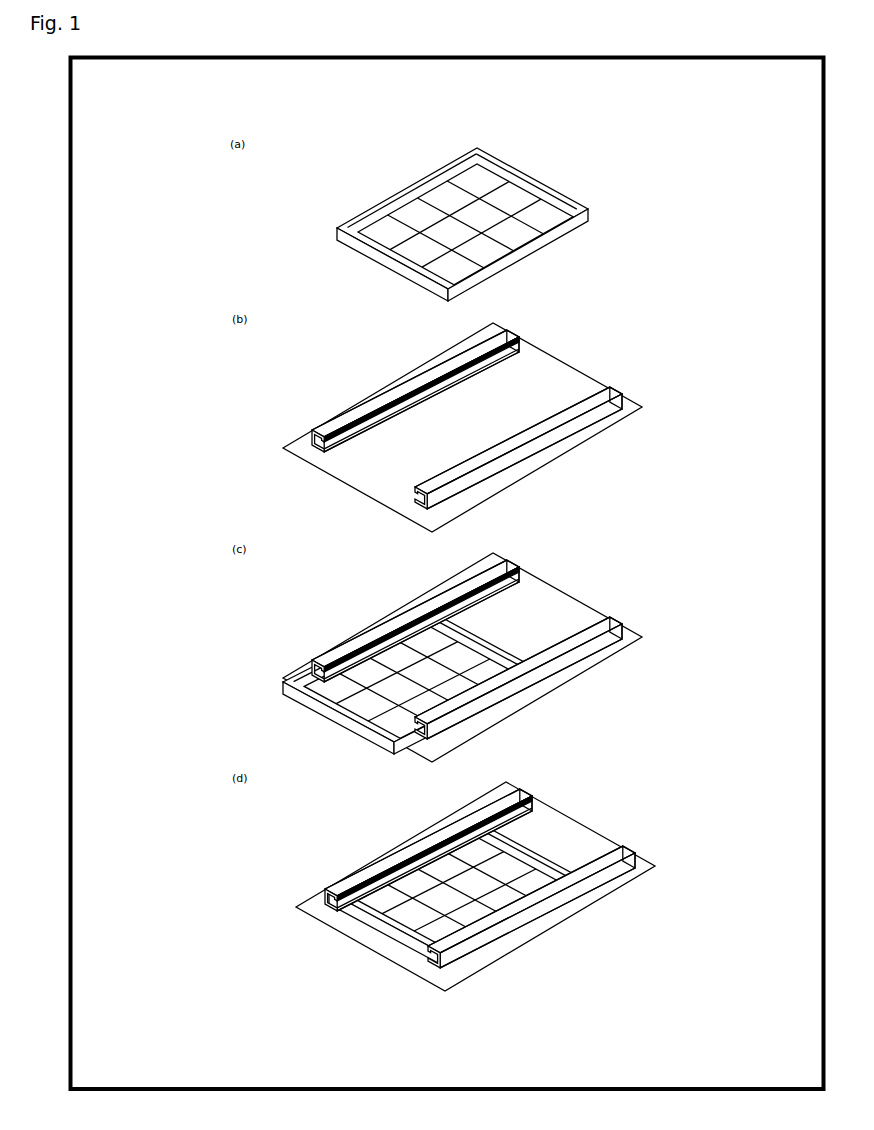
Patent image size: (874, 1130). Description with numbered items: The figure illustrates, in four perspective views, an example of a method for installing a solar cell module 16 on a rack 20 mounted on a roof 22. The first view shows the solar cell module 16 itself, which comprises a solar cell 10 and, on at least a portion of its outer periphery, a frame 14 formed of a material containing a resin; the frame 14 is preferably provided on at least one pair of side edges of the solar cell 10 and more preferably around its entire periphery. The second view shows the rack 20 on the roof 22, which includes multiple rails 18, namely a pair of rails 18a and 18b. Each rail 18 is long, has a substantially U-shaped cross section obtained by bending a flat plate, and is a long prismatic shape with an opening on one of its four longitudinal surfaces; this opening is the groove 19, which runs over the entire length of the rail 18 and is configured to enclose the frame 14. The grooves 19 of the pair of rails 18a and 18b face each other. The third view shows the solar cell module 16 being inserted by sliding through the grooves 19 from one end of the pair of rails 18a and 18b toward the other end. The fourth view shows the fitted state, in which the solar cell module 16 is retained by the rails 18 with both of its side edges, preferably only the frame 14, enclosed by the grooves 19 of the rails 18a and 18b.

The solar cell 10 is at (480, 250).
The frame 14 is at (401, 192).
The solar cell module 16 is at (461, 563).
The rail 18 is at (473, 649).
The rail 18a is at (372, 400).
The rail 18b is at (531, 448).
The groove 19 is at (335, 443).
The rack 20 is at (604, 390).
The roof 22 is at (621, 412).